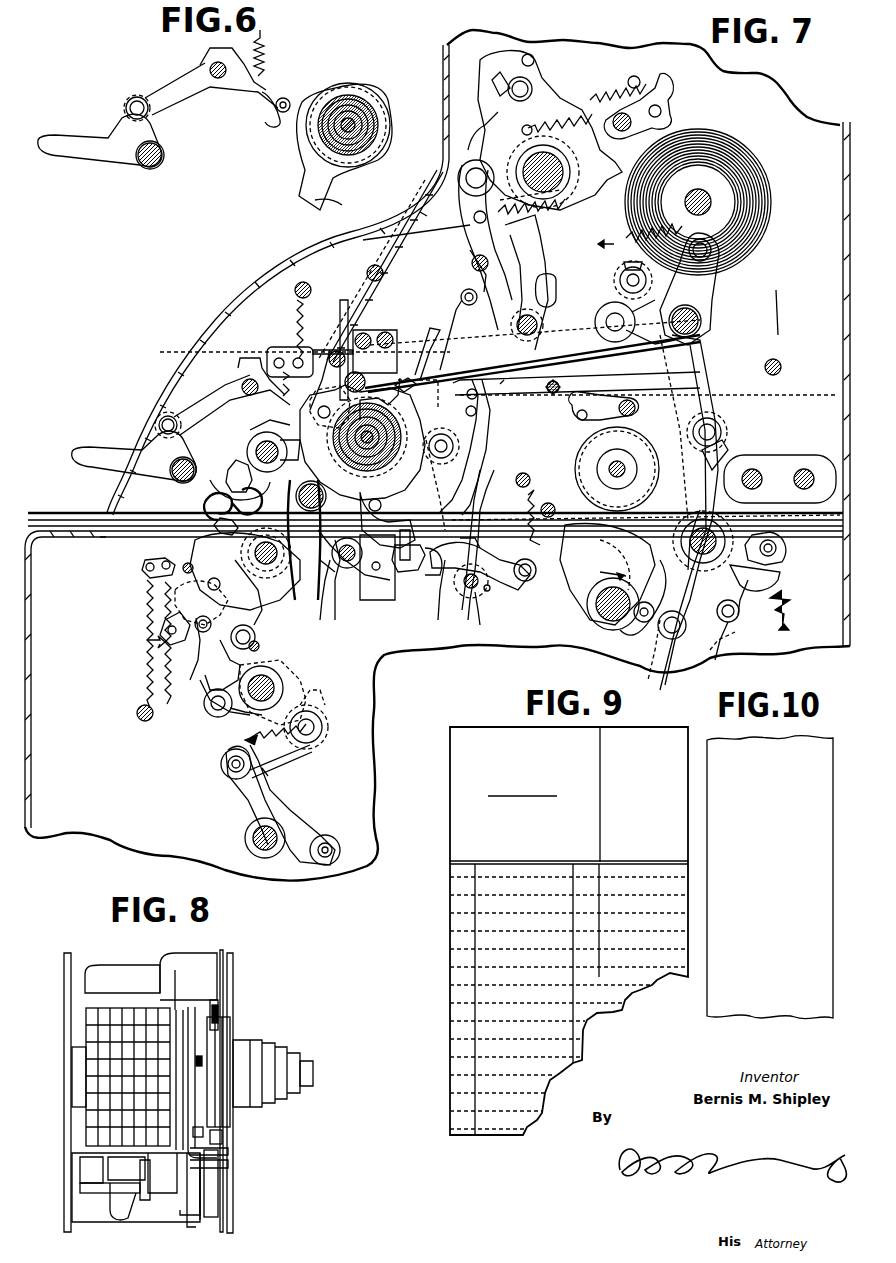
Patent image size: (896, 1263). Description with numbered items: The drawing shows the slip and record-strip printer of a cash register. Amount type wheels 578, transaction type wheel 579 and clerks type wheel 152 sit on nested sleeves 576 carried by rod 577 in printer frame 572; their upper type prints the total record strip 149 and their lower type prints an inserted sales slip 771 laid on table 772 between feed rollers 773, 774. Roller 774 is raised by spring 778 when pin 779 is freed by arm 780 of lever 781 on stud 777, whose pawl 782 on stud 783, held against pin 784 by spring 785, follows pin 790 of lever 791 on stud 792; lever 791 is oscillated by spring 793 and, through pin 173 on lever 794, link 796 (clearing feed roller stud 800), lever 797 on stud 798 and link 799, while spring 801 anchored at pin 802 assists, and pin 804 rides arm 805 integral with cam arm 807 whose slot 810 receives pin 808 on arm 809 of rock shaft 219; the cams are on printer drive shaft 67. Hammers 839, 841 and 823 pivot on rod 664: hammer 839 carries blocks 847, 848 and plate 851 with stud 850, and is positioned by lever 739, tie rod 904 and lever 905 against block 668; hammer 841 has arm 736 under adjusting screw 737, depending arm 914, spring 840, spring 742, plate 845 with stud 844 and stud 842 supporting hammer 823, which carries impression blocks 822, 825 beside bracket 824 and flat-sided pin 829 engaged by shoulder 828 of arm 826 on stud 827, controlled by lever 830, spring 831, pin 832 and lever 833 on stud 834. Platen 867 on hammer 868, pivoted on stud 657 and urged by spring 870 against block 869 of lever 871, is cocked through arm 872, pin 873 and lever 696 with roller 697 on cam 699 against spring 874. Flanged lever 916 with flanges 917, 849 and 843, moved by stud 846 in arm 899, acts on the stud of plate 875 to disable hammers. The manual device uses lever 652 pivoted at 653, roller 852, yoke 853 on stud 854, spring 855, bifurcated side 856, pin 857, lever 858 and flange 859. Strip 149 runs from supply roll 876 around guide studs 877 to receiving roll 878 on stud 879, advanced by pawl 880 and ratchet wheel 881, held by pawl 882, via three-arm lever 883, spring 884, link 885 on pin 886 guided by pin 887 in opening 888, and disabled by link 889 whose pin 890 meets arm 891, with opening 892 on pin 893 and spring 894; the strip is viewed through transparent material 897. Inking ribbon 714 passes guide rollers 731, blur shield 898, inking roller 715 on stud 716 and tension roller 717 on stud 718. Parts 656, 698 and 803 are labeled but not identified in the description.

In FIG. 7, the printer drive shaft 67 is at (595, 612).
In FIG. 7, the total record strip 149 is at (778, 290).
In FIG. 10, the total record strip 149 is at (760, 1018).
In FIG. 8, the clerks type wheel 152 is at (165, 1010).
In FIG. 7, the pin 173 is at (345, 386).
In FIG. 7, the rock shaft 219 is at (258, 442).
In FIG. 6, the nested sleeves 576 is at (360, 100).
In FIG. 7, the nested sleeves 576 is at (362, 442).
In FIG. 8, the nested sleeves 576 is at (270, 1060).
In FIG. 6, the rod 577 is at (350, 150).
In FIG. 8, the rod 577 is at (310, 1068).
In FIG. 8, the amount type wheels 578 is at (100, 1010).
In FIG. 8, the transaction type wheel 579 is at (152, 1010).
In FIG. 8, the printer frame 572 is at (236, 960).
In FIG. 6, the manipulative lever 652 is at (50, 140).
In FIG. 7, the manipulative lever 652 is at (82, 465).
In FIG. 6, the pivot 653 is at (160, 162).
In FIG. 7, the pivot 653 is at (178, 462).
In FIG. 8, the frame plate 656 is at (62, 1190).
In FIG. 7, the stud 657 is at (700, 318).
In FIG. 7, the rod 664 is at (702, 528).
In FIG. 7, the stationary block 668 is at (782, 460).
In FIG. 7, the lever 696 is at (728, 452).
In FIG. 7, the roller 697 is at (645, 655).
In FIG. 7, the pivot 698 is at (650, 640).
In FIG. 7, the cam 699 is at (690, 510).
In FIG. 7, the continuous inking ribbon 714 is at (509, 389).
In FIG. 7, the inking roller 715 is at (590, 450).
In FIG. 7, the stud 716 is at (624, 460).
In FIG. 7, the tension roller 717 is at (580, 398).
In FIG. 7, the stud 718 is at (630, 402).
In FIG. 7, the guide rollers 731 is at (552, 395).
In FIG. 7, the arm 736 is at (757, 611).
In FIG. 7, the adjusting screw 737 is at (780, 568).
In FIG. 7, the lever 739 is at (786, 550).
In FIG. 7, the spring 742 is at (790, 600).
In FIG. 9, the itemized sales slip 771 is at (455, 800).
In FIG. 7, the table 772 is at (90, 512).
In FIG. 7, the feed roller 773 is at (296, 496).
In FIG. 7, the feed roller 774 is at (330, 600).
In FIG. 7, the stud 777 is at (266, 565).
In FIG. 7, the spring 778 is at (148, 642).
In FIG. 7, the pin 779 is at (201, 601).
In FIG. 7, the arm 780 is at (255, 636).
In FIG. 7, the lever 781 is at (220, 556).
In FIG. 7, the spring tensioned pawl 782 is at (200, 682).
In FIG. 7, the stud 783 is at (196, 660).
In FIG. 7, the pin 784 is at (176, 636).
In FIG. 7, the spring 785 is at (145, 588).
In FIG. 7, the pin 790 is at (236, 650).
In FIG. 7, the lever 791 is at (248, 710).
In FIG. 7, the stud 792 is at (276, 686).
In FIG. 7, the spring 793 is at (240, 740).
In FIG. 7, the lever 794 is at (400, 400).
In FIG. 7, the link 796 is at (322, 752).
In FIG. 7, the lever 797 is at (238, 792).
In FIG. 7, the stud 798 is at (250, 840).
In FIG. 7, the link 799 is at (268, 760).
In FIG. 7, the feed roller stud 800 is at (342, 545).
In FIG. 7, the spring 801 is at (142, 565).
In FIG. 7, the pin 802 is at (136, 714).
In FIG. 7, the stud 803 is at (260, 648).
In FIG. 7, the pin 804 is at (142, 616).
In FIG. 7, the arm 805 is at (259, 592).
In FIG. 7, the cam arm 807 is at (245, 500).
In FIG. 7, the pin 808 is at (212, 521).
In FIG. 7, the arm 809 is at (238, 480).
In FIG. 7, the slot 810 is at (212, 496).
In FIG. 7, the impression block 822 is at (198, 707).
In FIG. 7, the hammer 823 is at (468, 592).
In FIG. 7, the bracket 824 is at (464, 445).
In FIG. 7, the impression block 825 is at (440, 622).
In FIG. 7, the arm 826 is at (490, 592).
In FIG. 7, the stud 827 is at (480, 625).
In FIG. 7, the shoulder 828 is at (520, 500).
In FIG. 7, the flat-sided pin 829 is at (480, 566).
In FIG. 7, the lever 830 is at (527, 582).
In FIG. 7, the spring 831 is at (528, 498).
In FIG. 7, the pin 832 is at (432, 580).
In FIG. 7, the lever 833 is at (387, 584).
In FIG. 7, the stud 834 is at (345, 565).
In FIG. 7, the impression hammer 839 is at (405, 575).
In FIG. 8, the impression hammer 839 is at (92, 1192).
In FIG. 7, the spring 840 is at (655, 590).
In FIG. 8, the impression hammer 841 is at (118, 1218).
In FIG. 7, the stud 842 is at (616, 574).
In FIG. 8, the flange 843 is at (205, 1165).
In FIG. 8, the stud 844 is at (200, 1132).
In FIG. 8, the plate 845 is at (192, 1228).
In FIG. 7, the stud 846 is at (334, 406).
In FIG. 8, the stud 846 is at (204, 1060).
In FIG. 8, the impression block 847 is at (80, 1160).
In FIG. 8, the impression block 848 is at (145, 1190).
In FIG. 7, the lower flange 849 is at (398, 388).
In FIG. 8, the lower flange 849 is at (215, 1152).
In FIG. 7, the stud 850 is at (388, 500).
In FIG. 8, the stud 850 is at (222, 1140).
In FIG. 7, the plate 851 is at (375, 586).
In FIG. 8, the plate 851 is at (222, 1210).
In FIG. 6, the roller 852 is at (140, 84).
In FIG. 7, the roller 852 is at (158, 422).
In FIG. 6, the yoke 853 is at (176, 103).
In FIG. 7, the yoke 853 is at (210, 400).
In FIG. 6, the stud 854 is at (212, 64).
In FIG. 7, the stud 854 is at (244, 380).
In FIG. 6, the spring 855 is at (266, 62).
In FIG. 7, the spring 855 is at (296, 350).
In FIG. 6, the bifurcated side of yoke 856 is at (266, 118).
In FIG. 6, the pin 857 is at (286, 100).
In FIG. 8, the pin 857 is at (178, 1010).
In FIG. 6, the lever 858 is at (305, 176).
In FIG. 8, the lever 858 is at (200, 1010).
In FIG. 6, the flange 859 is at (342, 202).
In FIG. 8, the flange 859 is at (202, 1180).
In FIG. 7, the platen 867 is at (395, 326).
In FIG. 7, the impression hammer 868 is at (466, 320).
In FIG. 8, the impression hammer 868 is at (112, 972).
In FIG. 7, the block 869 is at (620, 279).
In FIG. 7, the spring 870 is at (628, 336).
In FIG. 7, the oscillating lever 871 is at (702, 284).
In FIG. 7, the arm 872 is at (714, 395).
In FIG. 7, the pin 873 is at (722, 425).
In FIG. 7, the spring 874 is at (396, 378).
In FIG. 8, the spring 874 is at (220, 1010).
In FIG. 7, the plate 875 is at (352, 320).
In FIG. 8, the plate 875 is at (228, 955).
In FIG. 7, the supply roll 876 is at (742, 170).
In FIG. 7, the guide studs 877 is at (305, 291).
In FIG. 7, the receiving roll 878 is at (508, 132).
In FIG. 7, the stud 879 is at (550, 165).
In FIG. 7, the spring-pressed pawl 880 is at (496, 108).
In FIG. 7, the ratchet wheel 881 is at (493, 126).
In FIG. 7, the spring-pulled pawl 882 is at (666, 92).
In FIG. 7, the three arm lever 883 is at (537, 116).
In FIG. 7, the spring 884 is at (602, 92).
In FIG. 7, the link 885 is at (512, 348).
In FIG. 7, the pin 886 is at (455, 448).
In FIG. 7, the pin 887 is at (540, 326).
In FIG. 7, the elongated opening 888 is at (558, 295).
In FIG. 7, the link 889 is at (468, 205).
In FIG. 7, the flat sided pin 890 is at (462, 298).
In FIG. 7, the arm 891 is at (500, 280).
In FIG. 7, the opening 892 is at (480, 280).
In FIG. 7, the pin 893 is at (472, 265).
In FIG. 7, the spring 894 is at (512, 224).
In FIG. 7, the transparent material 897 is at (378, 252).
In FIG. 7, the blur shield 898 is at (296, 322).
In FIG. 7, the arm 899 is at (258, 445).
In FIG. 7, the tie rod 904 is at (730, 622).
In FIG. 7, the lever 905 is at (716, 662).
In FIG. 7, the depending arm 914 is at (190, 568).
In FIG. 7, the flanged lever 916 is at (435, 485).
In FIG. 8, the upper flange 917 is at (220, 1012).